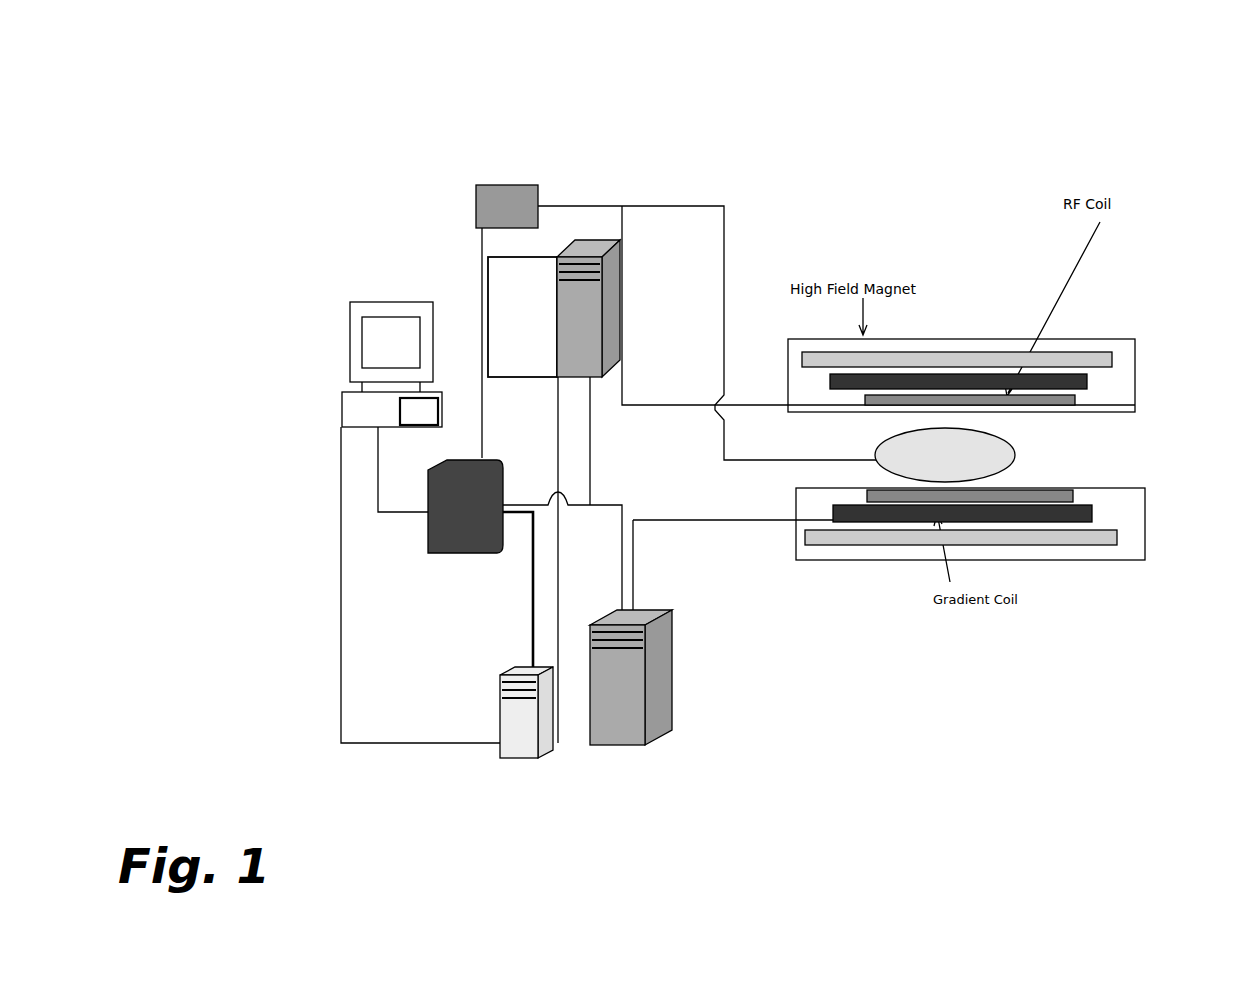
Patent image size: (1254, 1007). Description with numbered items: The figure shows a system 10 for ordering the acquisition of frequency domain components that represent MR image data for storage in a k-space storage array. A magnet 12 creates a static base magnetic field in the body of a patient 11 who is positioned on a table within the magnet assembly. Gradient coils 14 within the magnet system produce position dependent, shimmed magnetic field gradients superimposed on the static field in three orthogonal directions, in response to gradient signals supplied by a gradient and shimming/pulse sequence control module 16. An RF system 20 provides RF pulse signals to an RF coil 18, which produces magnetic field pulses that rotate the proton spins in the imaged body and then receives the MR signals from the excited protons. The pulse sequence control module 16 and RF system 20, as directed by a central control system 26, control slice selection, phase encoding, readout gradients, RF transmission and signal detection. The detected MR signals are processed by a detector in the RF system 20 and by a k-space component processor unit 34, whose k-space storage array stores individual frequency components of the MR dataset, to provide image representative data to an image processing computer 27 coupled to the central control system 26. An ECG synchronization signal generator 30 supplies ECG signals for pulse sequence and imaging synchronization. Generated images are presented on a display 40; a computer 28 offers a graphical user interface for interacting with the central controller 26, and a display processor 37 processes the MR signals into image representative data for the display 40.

The system 10 is at (772, 47).
The patient 11 is at (990, 466).
The magnet 12 is at (1060, 355).
The gradient coils 14 is at (1087, 382).
The gradient and shimming/pulse sequence control module 16 is at (645, 640).
The RF coil 18 is at (1135, 405).
The RF system 20 is at (620, 256).
The central control system 26 is at (430, 527).
The image processing computer 27 is at (497, 700).
The computer 28 is at (344, 400).
The ECG synchronization signal generator 30 is at (476, 215).
The k-space component processor unit 34 is at (488, 310).
The display processor 37 is at (422, 417).
The display 40 is at (387, 335).